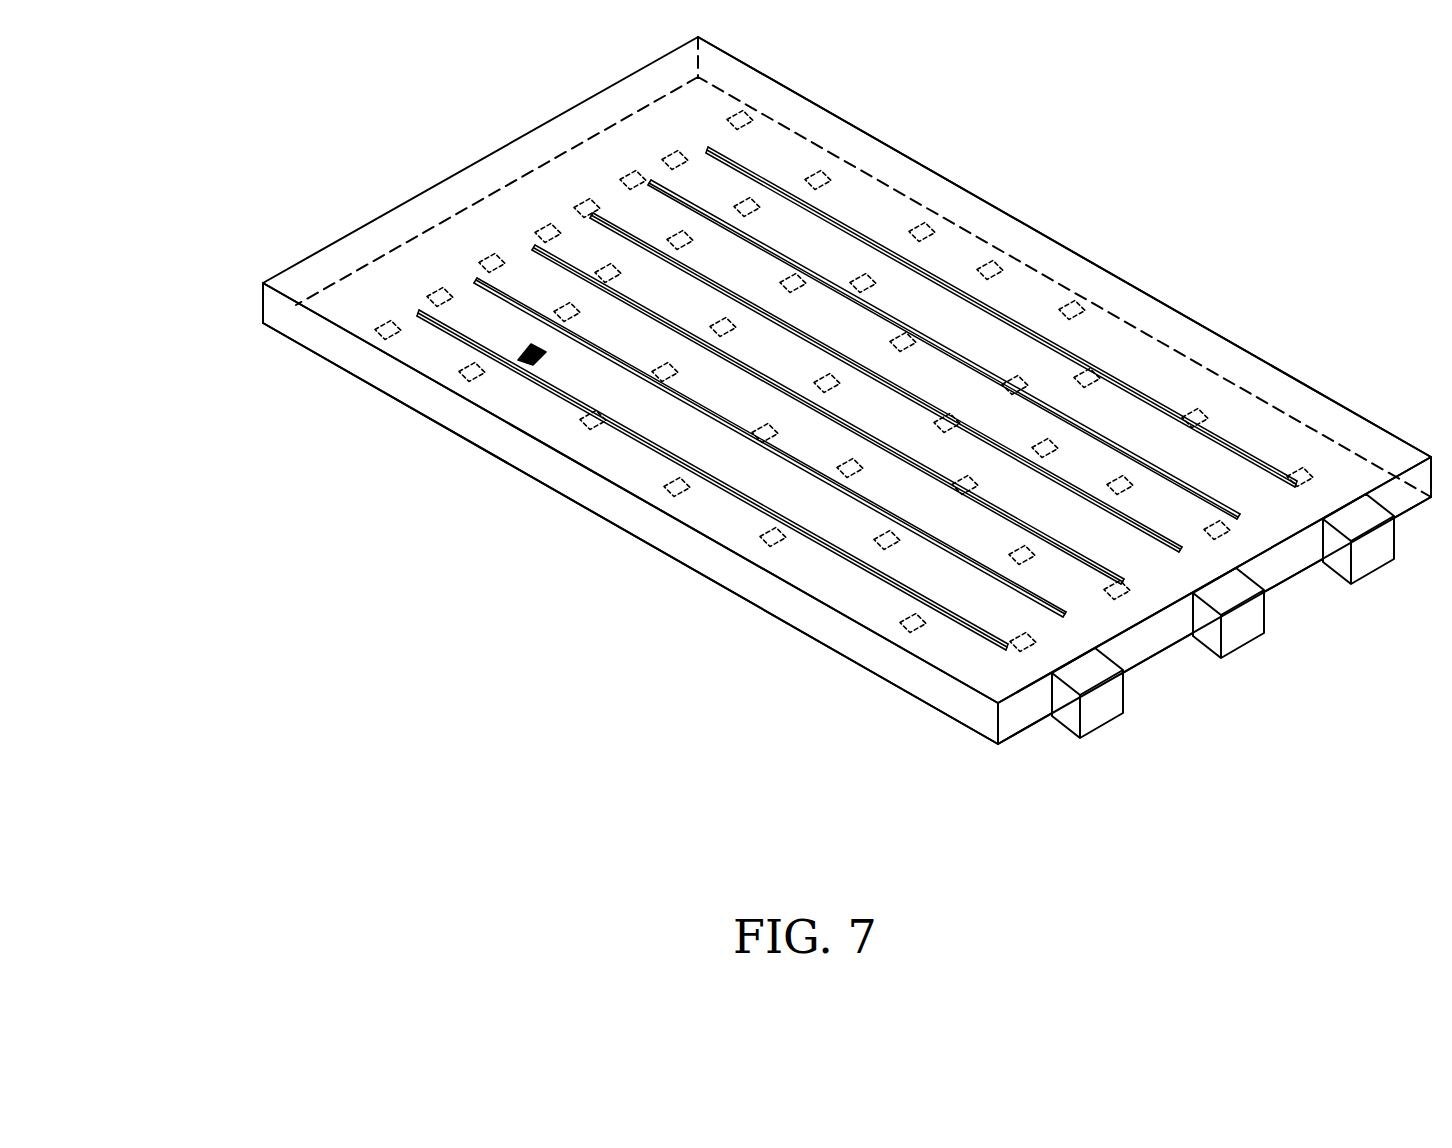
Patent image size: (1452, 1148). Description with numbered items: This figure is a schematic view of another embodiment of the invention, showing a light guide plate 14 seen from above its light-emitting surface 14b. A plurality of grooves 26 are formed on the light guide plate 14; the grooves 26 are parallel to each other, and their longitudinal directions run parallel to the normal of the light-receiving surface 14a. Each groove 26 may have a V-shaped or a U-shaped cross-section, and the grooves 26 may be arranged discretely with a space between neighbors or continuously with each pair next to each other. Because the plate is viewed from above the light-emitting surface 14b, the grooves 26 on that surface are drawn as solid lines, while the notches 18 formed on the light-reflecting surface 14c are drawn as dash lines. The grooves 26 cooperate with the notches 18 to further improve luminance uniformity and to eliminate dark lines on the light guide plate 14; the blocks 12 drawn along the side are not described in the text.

The support block 12 is at (1054, 740).
The light guide plate 14 is at (252, 289).
The light-receiving surface 14a is at (1153, 643).
The light-emitting surface 14b is at (1072, 248).
The light-reflecting surface 14c is at (627, 533).
The notch 18 is at (933, 228).
The groove 26 is at (645, 441).